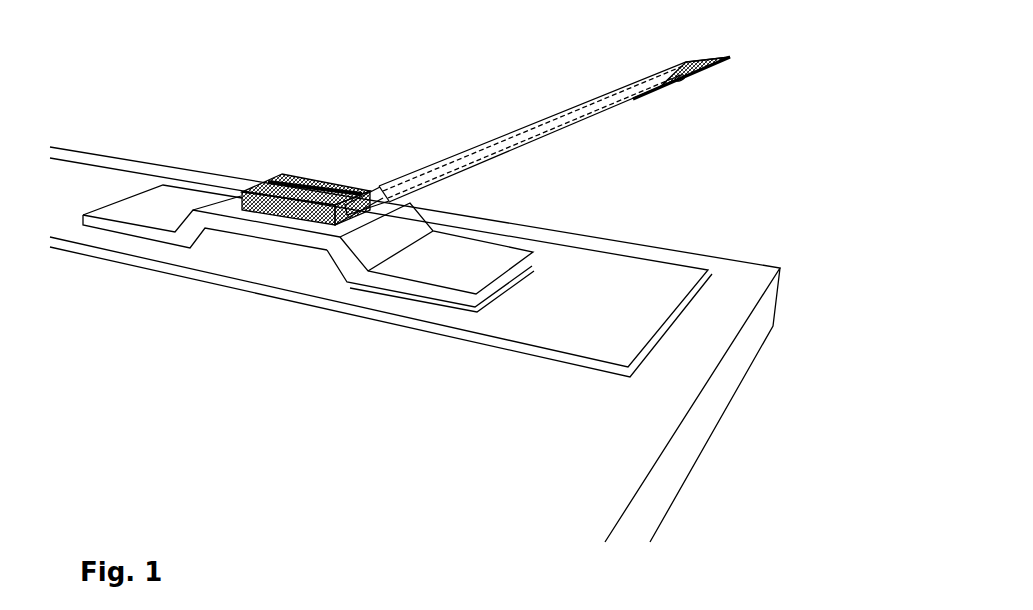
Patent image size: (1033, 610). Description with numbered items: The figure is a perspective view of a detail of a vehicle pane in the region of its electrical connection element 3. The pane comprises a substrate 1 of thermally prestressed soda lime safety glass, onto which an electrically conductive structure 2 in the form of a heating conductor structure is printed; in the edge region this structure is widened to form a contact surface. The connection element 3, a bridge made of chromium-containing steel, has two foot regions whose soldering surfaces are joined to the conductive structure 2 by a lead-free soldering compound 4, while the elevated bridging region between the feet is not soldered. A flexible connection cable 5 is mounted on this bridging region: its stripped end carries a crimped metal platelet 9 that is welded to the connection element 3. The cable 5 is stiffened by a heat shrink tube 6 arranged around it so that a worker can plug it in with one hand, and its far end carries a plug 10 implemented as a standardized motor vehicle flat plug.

The substrate 1 is at (725, 382).
The electrically conductive structure 2 is at (583, 342).
The electrical connection element 3 is at (170, 200).
The soldering compound 4 is at (378, 290).
The flexible connection cable 5 is at (563, 97).
The heat shrink tube 6 is at (525, 122).
The crimped metal platelet 9 is at (303, 180).
The plug 10 is at (702, 67).